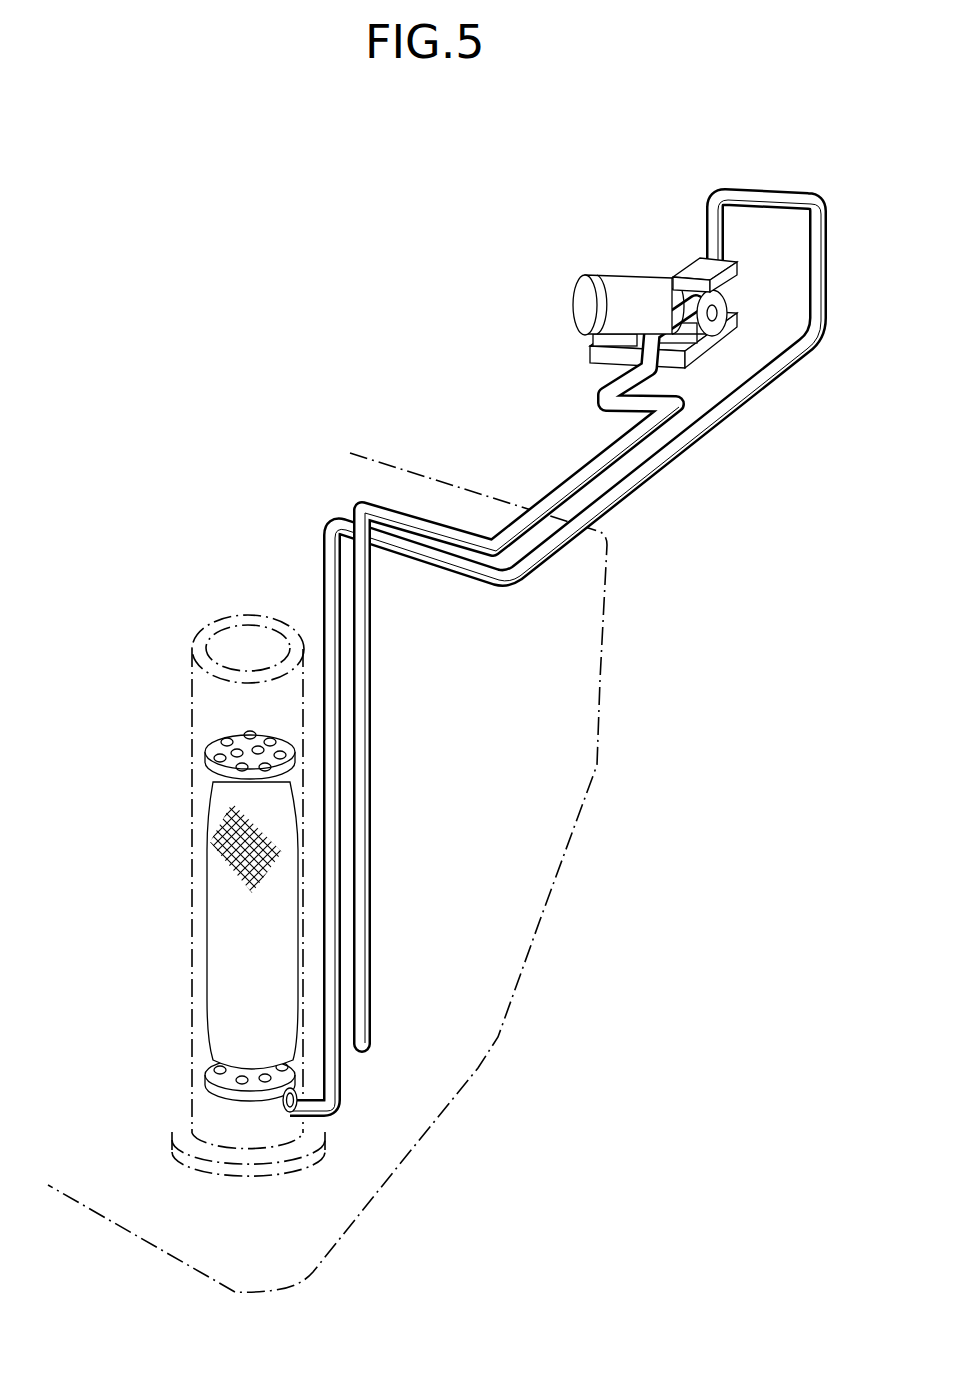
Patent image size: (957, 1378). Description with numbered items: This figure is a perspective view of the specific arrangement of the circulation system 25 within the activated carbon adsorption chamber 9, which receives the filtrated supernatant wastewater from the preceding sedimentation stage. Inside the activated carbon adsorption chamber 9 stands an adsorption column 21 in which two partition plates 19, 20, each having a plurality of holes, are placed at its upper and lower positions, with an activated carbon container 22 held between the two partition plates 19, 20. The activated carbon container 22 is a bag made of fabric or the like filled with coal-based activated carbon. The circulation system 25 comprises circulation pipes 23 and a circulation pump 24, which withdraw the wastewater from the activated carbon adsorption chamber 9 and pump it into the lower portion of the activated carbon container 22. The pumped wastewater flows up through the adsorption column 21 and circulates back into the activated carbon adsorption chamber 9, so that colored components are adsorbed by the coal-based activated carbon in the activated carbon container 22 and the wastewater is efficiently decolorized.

The activated carbon adsorption chamber 9 is at (483, 932).
The partition plate 19 is at (205, 752).
The partition plate 20 is at (205, 1065).
The adsorption column 21 is at (190, 683).
The activated carbon container 22 is at (222, 936).
The circulation pipe 23 is at (343, 1068).
The circulation pump 24 is at (608, 272).
The circulation system 25 is at (545, 322).